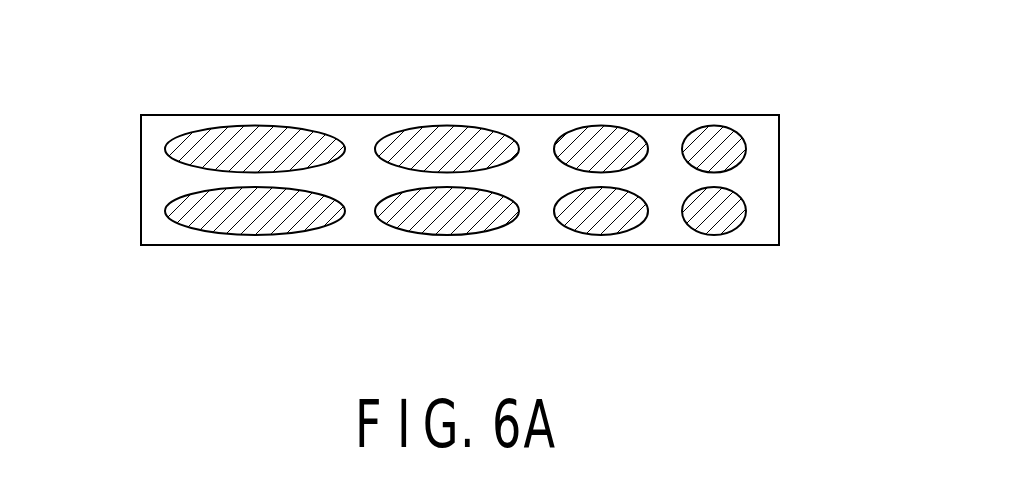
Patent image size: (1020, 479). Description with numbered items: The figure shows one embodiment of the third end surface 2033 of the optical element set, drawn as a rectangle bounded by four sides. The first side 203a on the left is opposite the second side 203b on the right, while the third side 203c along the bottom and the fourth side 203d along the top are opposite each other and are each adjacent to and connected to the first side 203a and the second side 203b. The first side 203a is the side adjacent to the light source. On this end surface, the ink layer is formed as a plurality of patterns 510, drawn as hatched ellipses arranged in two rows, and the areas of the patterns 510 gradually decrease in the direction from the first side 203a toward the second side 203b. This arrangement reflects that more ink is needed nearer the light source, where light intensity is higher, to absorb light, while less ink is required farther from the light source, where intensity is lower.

The third end surface 2033 is at (107, 27).
The patterns 510 is at (258, 138).
The first side 203a is at (140, 179).
The second side 203b is at (780, 179).
The third side 203c is at (460, 245).
The fourth side 203d is at (460, 115).